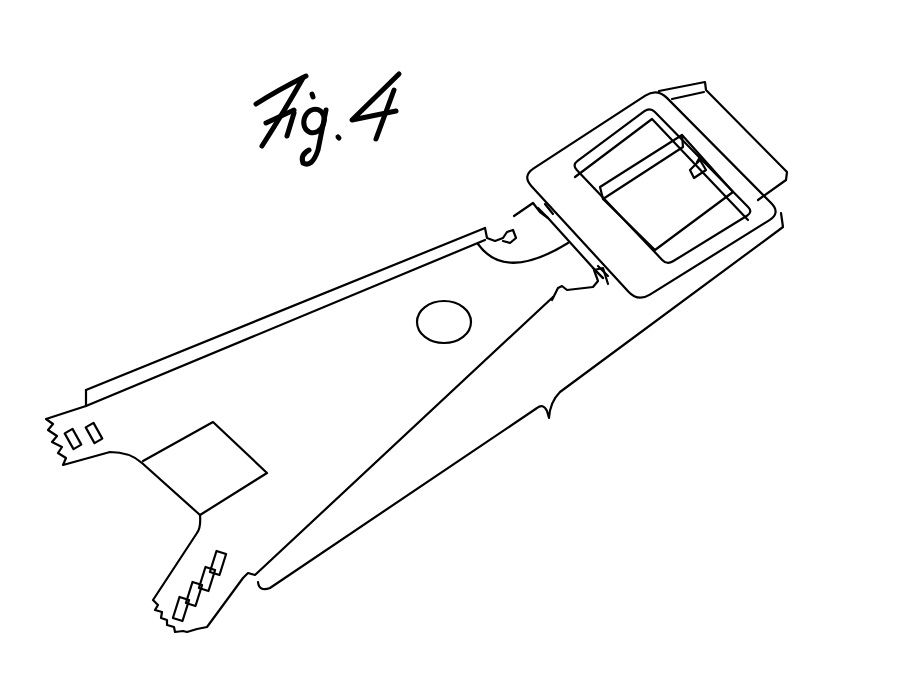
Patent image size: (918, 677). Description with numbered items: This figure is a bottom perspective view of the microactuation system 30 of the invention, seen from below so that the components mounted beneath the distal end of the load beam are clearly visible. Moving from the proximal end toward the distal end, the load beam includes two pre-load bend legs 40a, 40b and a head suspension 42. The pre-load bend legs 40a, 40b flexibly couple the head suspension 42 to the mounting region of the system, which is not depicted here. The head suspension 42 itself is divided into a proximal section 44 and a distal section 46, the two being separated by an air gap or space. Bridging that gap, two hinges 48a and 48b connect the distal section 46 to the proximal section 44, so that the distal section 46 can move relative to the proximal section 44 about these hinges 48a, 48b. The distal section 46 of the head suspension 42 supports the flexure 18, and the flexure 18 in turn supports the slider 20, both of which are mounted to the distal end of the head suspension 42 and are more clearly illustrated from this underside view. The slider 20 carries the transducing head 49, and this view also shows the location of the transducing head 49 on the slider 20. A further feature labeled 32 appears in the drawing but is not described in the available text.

The flexure 18 is at (560, 158).
The slider 20 is at (670, 217).
The microactuation system 30 is at (166, 253).
The tip 32 is at (474, 232).
The pre-load bend leg 40a is at (221, 590).
The pre-load bend leg 40b is at (72, 418).
The head suspension 42 is at (520, 401).
The proximal section 44 is at (318, 321).
The distal section 46 is at (700, 102).
The hinge 48a is at (605, 283).
The hinge 48b is at (514, 216).
The transducing head 49 is at (718, 173).